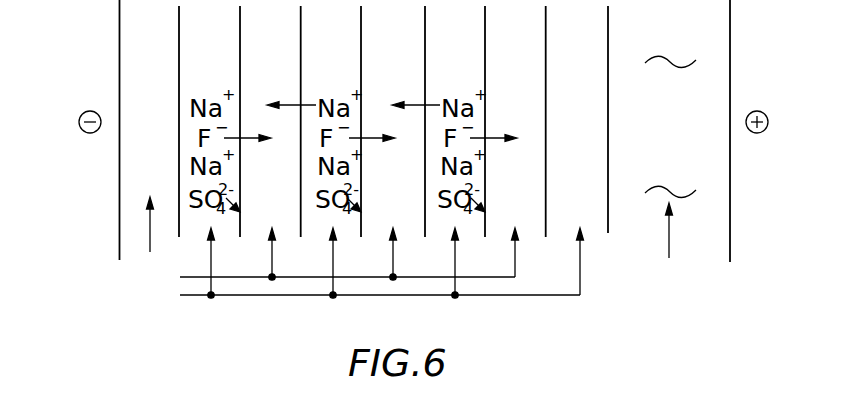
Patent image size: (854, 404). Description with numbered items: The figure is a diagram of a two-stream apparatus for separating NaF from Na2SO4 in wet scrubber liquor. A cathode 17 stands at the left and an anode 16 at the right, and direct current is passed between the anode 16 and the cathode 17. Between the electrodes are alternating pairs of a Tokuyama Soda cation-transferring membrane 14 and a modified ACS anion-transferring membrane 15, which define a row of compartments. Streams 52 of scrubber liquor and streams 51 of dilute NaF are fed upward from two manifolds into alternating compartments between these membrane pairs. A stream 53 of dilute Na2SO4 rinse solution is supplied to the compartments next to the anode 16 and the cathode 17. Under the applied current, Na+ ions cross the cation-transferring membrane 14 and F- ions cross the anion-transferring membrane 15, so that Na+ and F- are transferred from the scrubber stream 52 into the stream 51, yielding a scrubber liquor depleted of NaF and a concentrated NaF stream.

The cation-transferring membrane 14 is at (179, 42).
The anion-transferring membrane 15 is at (240, 42).
The anode 16 is at (730, 50).
The cathode 17 is at (119, 42).
The stream of dilute NaF 51 is at (180, 277).
The stream of scrubber liquor 52 is at (180, 295).
The rinse solution stream 53 is at (407, 242).